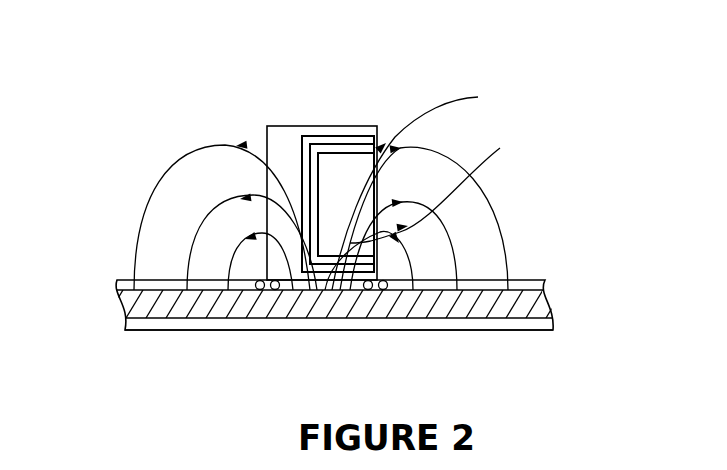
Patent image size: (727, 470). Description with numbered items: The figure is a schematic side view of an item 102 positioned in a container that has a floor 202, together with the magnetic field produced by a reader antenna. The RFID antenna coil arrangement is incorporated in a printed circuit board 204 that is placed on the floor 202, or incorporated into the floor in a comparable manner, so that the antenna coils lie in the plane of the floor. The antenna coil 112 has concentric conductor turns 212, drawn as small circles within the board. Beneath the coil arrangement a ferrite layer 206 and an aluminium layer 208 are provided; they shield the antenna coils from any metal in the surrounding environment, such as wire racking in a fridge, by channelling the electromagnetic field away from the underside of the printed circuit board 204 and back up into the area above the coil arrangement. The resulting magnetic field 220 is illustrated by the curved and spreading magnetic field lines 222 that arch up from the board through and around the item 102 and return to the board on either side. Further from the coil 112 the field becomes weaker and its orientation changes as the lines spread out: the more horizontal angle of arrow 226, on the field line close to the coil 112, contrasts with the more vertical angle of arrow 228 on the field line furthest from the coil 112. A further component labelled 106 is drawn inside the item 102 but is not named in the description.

The item 102 is at (367, 147).
The coil 106 is at (357, 145).
The antenna coil 112 is at (278, 297).
The floor 202 is at (340, 302).
The printed circuit board 204 is at (530, 279).
The ferrite layer 206 is at (552, 305).
The aluminium layer 208 is at (120, 323).
The concentric conductor turns 212 is at (273, 289).
The magnetic field 220 is at (142, 167).
The magnetic field lines 222 is at (492, 200).
The arrow 226 is at (447, 180).
The arrow 228 is at (433, 186).